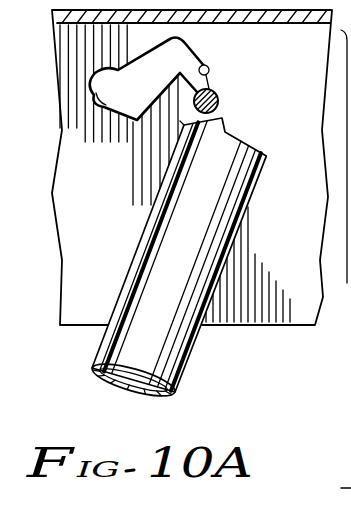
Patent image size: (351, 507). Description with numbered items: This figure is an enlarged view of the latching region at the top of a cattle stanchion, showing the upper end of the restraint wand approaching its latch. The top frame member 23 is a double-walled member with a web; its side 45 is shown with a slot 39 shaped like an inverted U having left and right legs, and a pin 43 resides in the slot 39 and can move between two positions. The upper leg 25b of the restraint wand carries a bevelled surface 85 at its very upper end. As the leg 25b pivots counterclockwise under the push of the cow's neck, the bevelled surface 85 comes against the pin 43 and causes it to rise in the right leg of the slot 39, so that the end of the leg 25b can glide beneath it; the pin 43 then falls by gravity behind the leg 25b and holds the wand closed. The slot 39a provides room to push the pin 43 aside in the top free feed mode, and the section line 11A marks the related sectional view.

The top frame member 23 is at (45, 271).
The side 45 is at (106, 227).
The section line 11A is at (32, 118).
The slot 39 is at (206, 66).
The slot 39a is at (99, 110).
The pin 43 is at (219, 98).
The leg 25b is at (230, 251).
The bevelled surface 85 is at (182, 122).